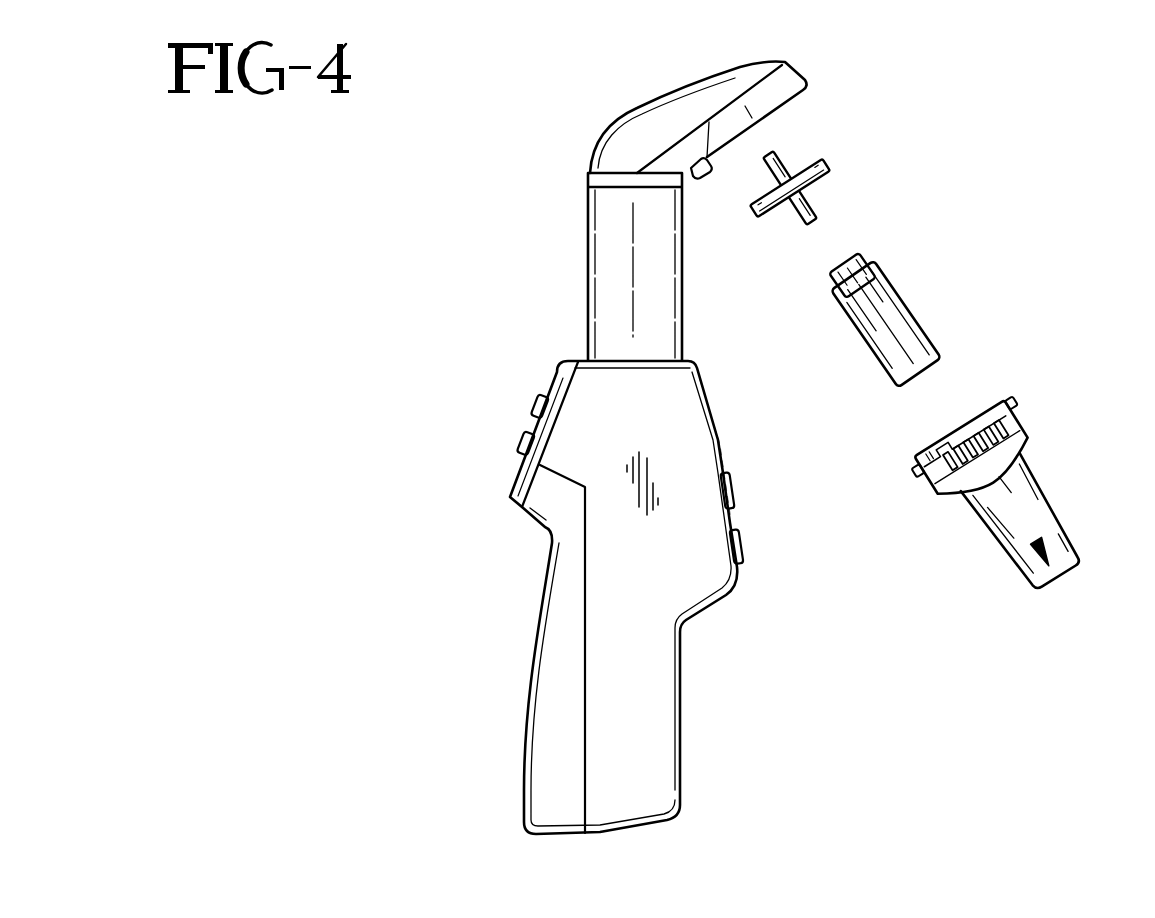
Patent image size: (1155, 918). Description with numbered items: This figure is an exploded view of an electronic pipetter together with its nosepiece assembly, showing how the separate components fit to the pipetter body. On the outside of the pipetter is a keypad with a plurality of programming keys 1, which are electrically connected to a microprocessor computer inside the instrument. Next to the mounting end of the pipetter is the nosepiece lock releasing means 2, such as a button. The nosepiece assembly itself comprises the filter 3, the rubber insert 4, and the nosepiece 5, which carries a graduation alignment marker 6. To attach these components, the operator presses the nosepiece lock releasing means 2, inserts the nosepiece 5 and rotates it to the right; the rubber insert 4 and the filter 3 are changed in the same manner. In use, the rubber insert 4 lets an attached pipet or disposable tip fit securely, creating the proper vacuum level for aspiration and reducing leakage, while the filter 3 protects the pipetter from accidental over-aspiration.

The programming keys 1 is at (548, 378).
The nosepiece lock releasing means 2 is at (706, 177).
The filter 3 is at (827, 167).
The rubber insert 4 is at (895, 281).
The nosepiece 5 is at (1037, 478).
The graduation alignment marker 6 is at (1057, 573).